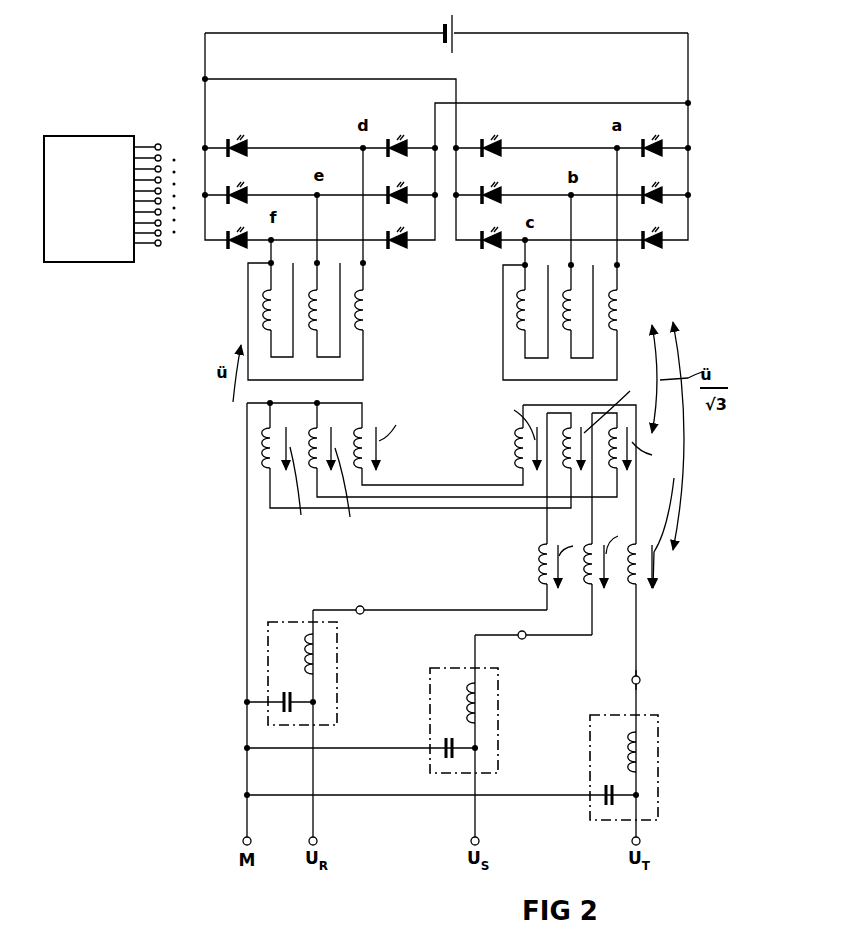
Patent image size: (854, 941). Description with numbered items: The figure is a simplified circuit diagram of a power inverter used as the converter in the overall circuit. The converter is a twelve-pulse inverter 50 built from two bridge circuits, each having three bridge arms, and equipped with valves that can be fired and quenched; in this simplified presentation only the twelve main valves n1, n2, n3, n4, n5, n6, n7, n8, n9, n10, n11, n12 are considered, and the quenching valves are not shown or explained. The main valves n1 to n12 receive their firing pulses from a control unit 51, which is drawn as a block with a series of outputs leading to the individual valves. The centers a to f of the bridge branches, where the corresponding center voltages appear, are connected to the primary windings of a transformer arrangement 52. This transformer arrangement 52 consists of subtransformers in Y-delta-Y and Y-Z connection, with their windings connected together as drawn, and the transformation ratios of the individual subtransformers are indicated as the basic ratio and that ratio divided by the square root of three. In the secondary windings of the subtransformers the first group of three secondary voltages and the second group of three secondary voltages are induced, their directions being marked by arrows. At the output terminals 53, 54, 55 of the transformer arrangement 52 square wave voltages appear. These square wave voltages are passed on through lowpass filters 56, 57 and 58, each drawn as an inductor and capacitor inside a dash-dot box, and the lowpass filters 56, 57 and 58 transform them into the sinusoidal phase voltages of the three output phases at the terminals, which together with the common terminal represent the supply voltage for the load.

The twelve-pulse inverter 50 is at (314, 113).
The control unit 51 is at (86, 263).
The transformer arrangement 52 is at (433, 457).
The output terminal 53 is at (360, 606).
The output terminal 54 is at (522, 639).
The output terminal 55 is at (640, 680).
The lowpass filter 56 is at (337, 658).
The lowpass filter 57 is at (430, 693).
The lowpass filter 58 is at (658, 748).
The main valve n1 is at (405, 141).
The main valve n2 is at (247, 141).
The main valve n3 is at (405, 189).
The main valve n4 is at (247, 189).
The main valve n5 is at (404, 248).
The main valve n6 is at (244, 248).
The main valve n7 is at (661, 141).
The main valve n8 is at (500, 141).
The main valve n9 is at (661, 188).
The main valve n10 is at (500, 188).
The main valve n11 is at (656, 249).
The main valve n12 is at (498, 249).